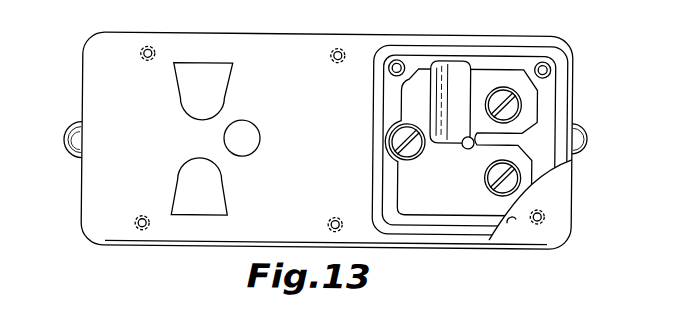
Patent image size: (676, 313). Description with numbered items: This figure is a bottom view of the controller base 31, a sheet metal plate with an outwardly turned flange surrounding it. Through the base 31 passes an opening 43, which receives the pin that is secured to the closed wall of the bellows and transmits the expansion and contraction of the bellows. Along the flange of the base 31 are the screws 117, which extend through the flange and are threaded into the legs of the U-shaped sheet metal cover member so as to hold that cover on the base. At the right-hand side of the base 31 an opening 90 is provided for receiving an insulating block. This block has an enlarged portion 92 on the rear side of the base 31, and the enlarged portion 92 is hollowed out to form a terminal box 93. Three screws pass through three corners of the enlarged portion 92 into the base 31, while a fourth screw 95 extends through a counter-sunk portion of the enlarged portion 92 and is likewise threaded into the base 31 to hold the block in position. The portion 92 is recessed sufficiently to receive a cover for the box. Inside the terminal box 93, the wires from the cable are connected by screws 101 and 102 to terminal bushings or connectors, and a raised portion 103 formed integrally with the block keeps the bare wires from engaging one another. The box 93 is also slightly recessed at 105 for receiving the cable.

The base 31 is at (286, 186).
The opening 43 is at (254, 127).
The screws 117 is at (76, 124).
The enlarged portion 92 is at (373, 202).
The terminal box 93 is at (424, 200).
The recess 105 is at (436, 65).
The raised portion 103 is at (465, 148).
The fourth screw 95 is at (392, 141).
The screw 101 is at (520, 110).
The screw 102 is at (519, 171).
The opening 90 is at (511, 224).